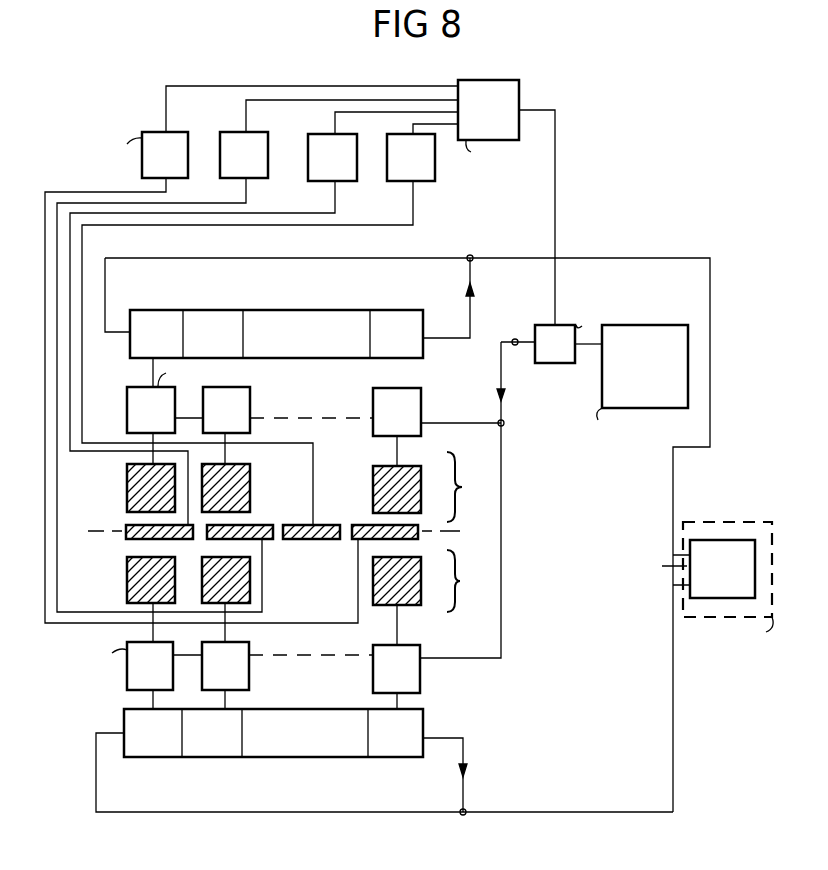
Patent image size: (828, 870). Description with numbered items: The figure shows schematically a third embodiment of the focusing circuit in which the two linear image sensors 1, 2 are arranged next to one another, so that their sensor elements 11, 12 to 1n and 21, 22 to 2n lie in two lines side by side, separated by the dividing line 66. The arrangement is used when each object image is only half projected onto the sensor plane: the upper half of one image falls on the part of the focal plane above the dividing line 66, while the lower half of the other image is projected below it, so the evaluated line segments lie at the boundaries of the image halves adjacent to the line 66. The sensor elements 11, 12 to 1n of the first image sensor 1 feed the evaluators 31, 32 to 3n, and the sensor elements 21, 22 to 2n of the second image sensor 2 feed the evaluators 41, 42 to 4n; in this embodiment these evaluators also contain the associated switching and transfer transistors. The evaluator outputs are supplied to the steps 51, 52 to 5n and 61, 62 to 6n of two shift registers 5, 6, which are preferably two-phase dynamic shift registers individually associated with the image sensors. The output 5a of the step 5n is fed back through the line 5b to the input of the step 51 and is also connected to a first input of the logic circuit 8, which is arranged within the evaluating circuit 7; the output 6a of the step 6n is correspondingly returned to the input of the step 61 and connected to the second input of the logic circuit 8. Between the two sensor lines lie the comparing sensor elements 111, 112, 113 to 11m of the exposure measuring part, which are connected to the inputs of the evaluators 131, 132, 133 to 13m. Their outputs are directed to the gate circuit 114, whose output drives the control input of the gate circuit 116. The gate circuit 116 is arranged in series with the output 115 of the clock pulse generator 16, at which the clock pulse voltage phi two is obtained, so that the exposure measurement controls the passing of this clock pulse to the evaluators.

The evaluator 131 is at (251, 354).
The evaluator 132 is at (257, 356).
The evaluator 133 is at (264, 318).
The evaluator 13m is at (270, 324).
The gate circuit 114 is at (506, 202).
The gate circuit 116 is at (568, 332).
The clock pulse generator 16 is at (634, 390).
The output of the clock pulse generator 115 is at (480, 483).
The shift register 6 is at (276, 319).
The shift register step 61 is at (156, 351).
The shift register step 62 is at (213, 335).
The shift register step 6n is at (427, 306).
The output of step 6n 6a is at (407, 518).
The evaluator 41 is at (187, 414).
The evaluator 42 is at (288, 425).
The evaluator 4n is at (397, 427).
The linear image sensor 2 is at (464, 487).
The sensor element 21 is at (138, 488).
The sensor element 22 is at (239, 488).
The sensor element 2n is at (383, 489).
The dividing line 66 is at (276, 532).
The comparing sensor element 111 is at (135, 534).
The comparing sensor element 112 is at (263, 540).
The comparing sensor element 113 is at (295, 526).
The comparing sensor element 11m is at (358, 540).
The linear image sensor 1 is at (464, 581).
The sensor element 11 is at (138, 599).
The sensor element 12 is at (214, 599).
The sensor element 1n is at (410, 601).
The evaluator 31 is at (122, 675).
The evaluator 32 is at (287, 675).
The evaluator 3n is at (396, 677).
The shift register 5 is at (273, 717).
The shift register step 51 is at (153, 734).
The shift register step 52 is at (212, 734).
The shift register step 5n is at (423, 763).
The output of step 5n 5a is at (478, 799).
The line 5b is at (384, 788).
The evaluating circuit 7 is at (717, 523).
The logic circuit 8 is at (681, 569).